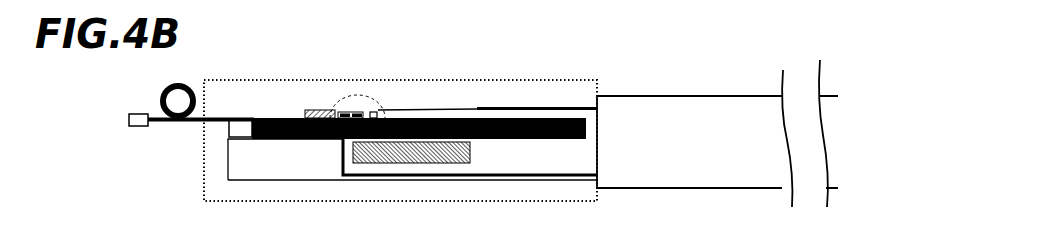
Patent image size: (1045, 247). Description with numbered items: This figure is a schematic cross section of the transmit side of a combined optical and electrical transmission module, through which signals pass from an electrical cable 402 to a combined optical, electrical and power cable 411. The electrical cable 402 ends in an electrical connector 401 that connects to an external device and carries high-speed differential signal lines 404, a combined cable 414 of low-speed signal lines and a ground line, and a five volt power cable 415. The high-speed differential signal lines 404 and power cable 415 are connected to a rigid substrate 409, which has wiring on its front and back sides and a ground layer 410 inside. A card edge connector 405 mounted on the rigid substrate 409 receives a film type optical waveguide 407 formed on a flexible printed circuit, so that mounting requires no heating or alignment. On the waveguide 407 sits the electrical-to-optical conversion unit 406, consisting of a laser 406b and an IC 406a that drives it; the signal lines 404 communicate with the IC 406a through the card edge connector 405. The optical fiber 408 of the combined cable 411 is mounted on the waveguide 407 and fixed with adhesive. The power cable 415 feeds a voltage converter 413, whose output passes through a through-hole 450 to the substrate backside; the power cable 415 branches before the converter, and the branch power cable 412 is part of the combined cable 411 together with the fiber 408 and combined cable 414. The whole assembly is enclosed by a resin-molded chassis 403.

The electrical connector 401 is at (133, 127).
The electrical cable 402 is at (187, 80).
The chassis 403 is at (248, 80).
The high-speed differential signal lines 404 is at (248, 117).
The card edge connector 405 is at (318, 109).
The electrical-to-optical conversion unit 406 is at (393, 102).
The IC for driving the laser 406a is at (353, 111).
The laser 406b is at (375, 111).
The film type optical waveguide 407 is at (467, 108).
The optical fiber 408 is at (502, 108).
The rigid substrate 409 is at (543, 110).
The ground layer 410 is at (585, 124).
The combined optical, electrical and power cable 411 is at (672, 108).
The power cable 412 is at (567, 175).
The voltage converter 413 is at (418, 165).
The combined cable 414 is at (268, 181).
The power cable 415 is at (243, 147).
The through-hole 450 is at (515, 140).